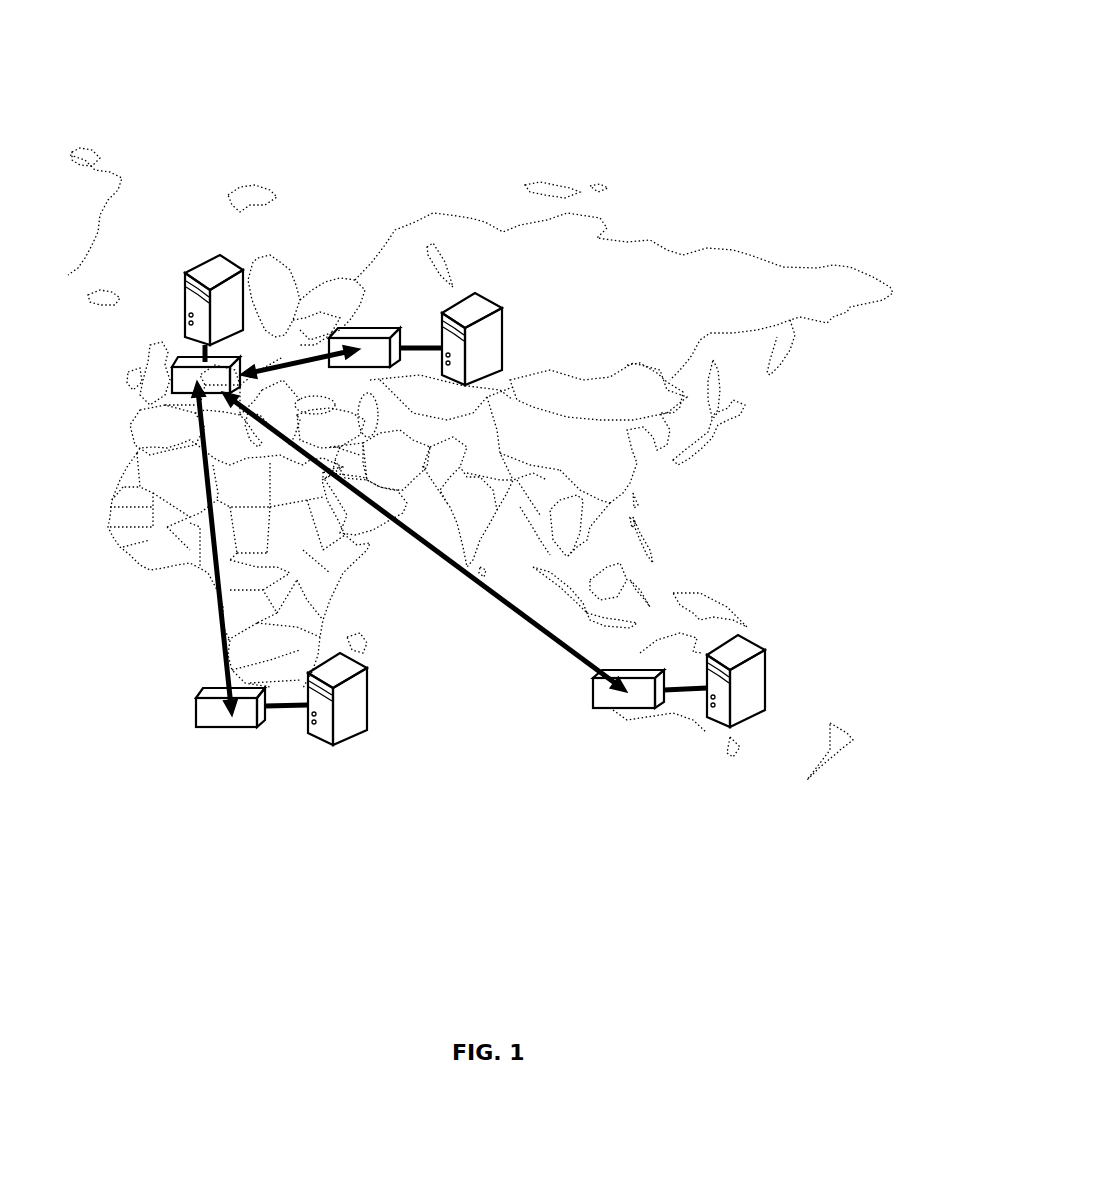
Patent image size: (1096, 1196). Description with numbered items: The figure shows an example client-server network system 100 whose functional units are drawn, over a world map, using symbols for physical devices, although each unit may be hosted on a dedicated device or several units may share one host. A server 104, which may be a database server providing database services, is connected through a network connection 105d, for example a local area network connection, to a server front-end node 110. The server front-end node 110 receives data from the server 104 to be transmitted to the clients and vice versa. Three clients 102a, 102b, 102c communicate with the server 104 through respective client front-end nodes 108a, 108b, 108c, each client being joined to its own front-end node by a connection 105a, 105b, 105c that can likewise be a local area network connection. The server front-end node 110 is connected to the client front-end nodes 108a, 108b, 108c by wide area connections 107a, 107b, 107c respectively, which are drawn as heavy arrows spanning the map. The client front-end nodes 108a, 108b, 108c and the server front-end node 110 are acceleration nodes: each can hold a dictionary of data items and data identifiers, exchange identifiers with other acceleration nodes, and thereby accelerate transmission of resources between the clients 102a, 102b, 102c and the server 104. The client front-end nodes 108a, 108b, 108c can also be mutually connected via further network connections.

The system 100 is at (690, 90).
The server 104 is at (215, 273).
The network connection 105d is at (203, 352).
The server front-end node 110 is at (180, 382).
The wide area connection 107c is at (290, 358).
The client front-end node 108c is at (372, 345).
The connection 105c is at (421, 345).
The client 102c is at (483, 350).
The wide area connection 107a is at (212, 612).
The client front-end node 108a is at (226, 717).
The connection 105a is at (275, 714).
The client 102a is at (348, 717).
The wide area connection 107b is at (442, 572).
The client front-end node 108b is at (607, 700).
The connection 105b is at (683, 695).
The client 102b is at (750, 702).